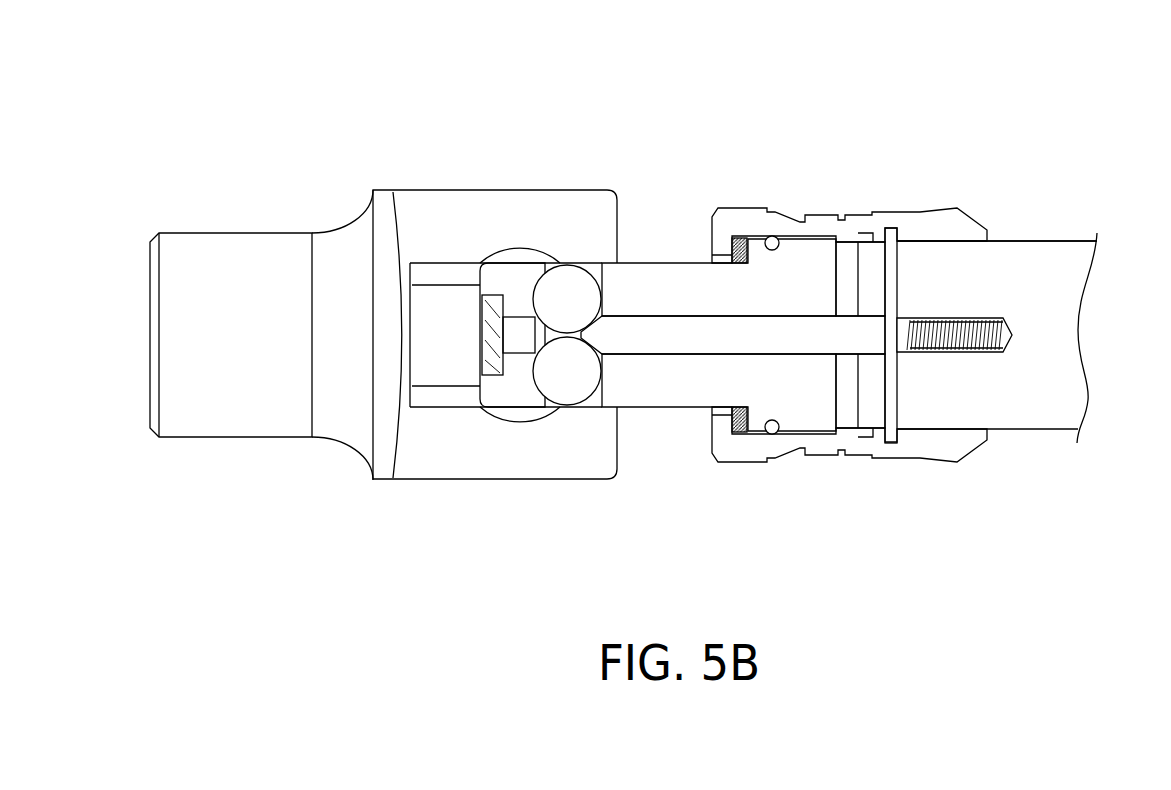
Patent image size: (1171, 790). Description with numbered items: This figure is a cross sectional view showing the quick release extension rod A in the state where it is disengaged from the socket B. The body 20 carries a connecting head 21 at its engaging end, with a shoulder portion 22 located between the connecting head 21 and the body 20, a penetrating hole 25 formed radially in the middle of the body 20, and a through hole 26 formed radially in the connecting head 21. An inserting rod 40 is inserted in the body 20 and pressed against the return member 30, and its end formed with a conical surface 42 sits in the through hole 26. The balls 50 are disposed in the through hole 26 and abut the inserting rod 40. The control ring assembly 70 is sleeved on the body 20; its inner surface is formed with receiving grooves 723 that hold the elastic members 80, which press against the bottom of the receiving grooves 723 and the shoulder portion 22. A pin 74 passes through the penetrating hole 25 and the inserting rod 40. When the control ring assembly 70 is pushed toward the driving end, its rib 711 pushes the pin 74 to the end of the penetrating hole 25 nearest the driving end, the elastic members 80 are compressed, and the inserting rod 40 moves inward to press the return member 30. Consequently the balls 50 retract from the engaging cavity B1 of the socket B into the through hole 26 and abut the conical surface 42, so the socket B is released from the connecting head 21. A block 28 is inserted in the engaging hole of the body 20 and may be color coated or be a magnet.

The socket B is at (202, 233).
The engaging cavity B1 is at (526, 415).
The through hole 26 is at (592, 265).
The block 28 is at (487, 332).
The connecting head 21 is at (677, 398).
The inserting rod 40 is at (863, 358).
The balls 50 is at (565, 270).
The conical surface 42 is at (588, 370).
The control ring assembly 70 is at (795, 207).
The receiving grooves 723 is at (725, 260).
The elastic members 80 is at (738, 237).
The shoulder portion 22 is at (760, 262).
The penetrating hole 25 is at (862, 263).
The rib 711 is at (878, 236).
The pin 74 is at (890, 260).
The body 20 is at (1005, 240).
The return member 30 is at (928, 360).
The quick release extension rod A is at (988, 183).